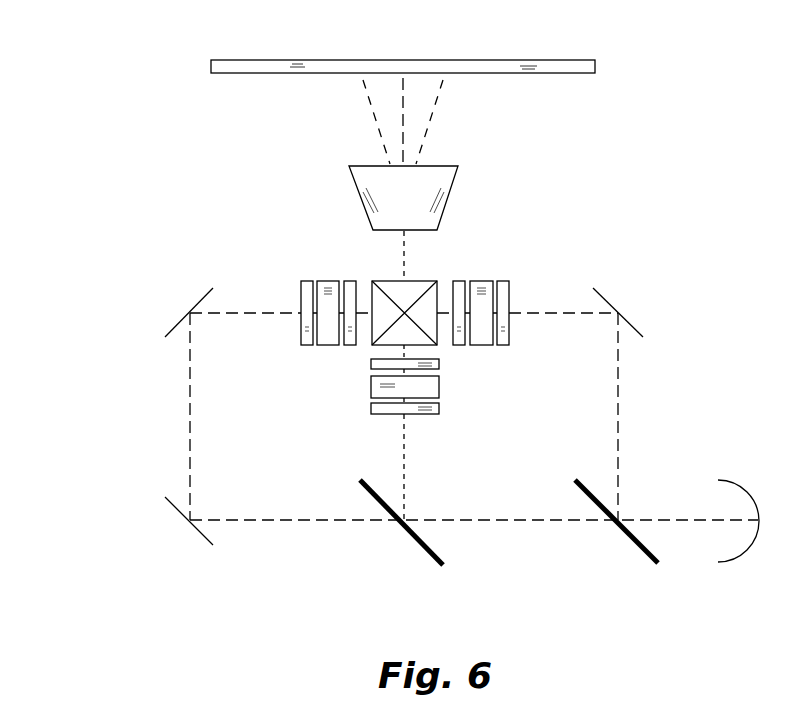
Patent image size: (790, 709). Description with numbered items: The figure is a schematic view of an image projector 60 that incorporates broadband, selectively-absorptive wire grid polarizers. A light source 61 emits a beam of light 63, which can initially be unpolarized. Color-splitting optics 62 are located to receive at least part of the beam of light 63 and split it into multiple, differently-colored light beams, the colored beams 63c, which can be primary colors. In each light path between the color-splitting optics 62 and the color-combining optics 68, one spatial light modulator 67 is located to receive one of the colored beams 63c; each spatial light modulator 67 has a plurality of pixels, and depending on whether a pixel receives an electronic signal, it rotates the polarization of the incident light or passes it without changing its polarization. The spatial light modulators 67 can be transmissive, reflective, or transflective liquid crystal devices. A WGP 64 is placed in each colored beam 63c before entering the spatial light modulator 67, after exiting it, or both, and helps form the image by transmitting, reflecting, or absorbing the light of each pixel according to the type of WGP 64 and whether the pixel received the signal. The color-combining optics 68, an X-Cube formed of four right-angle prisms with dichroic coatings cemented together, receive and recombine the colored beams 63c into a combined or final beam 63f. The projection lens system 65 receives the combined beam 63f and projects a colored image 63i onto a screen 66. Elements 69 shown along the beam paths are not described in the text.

The image projector 60 is at (113, 40).
The light source 61 is at (738, 481).
The color-splitting optics 62 is at (443, 571).
The beam of light 63 is at (682, 523).
The colored beams 63c is at (712, 373).
The combined beam 63f is at (403, 237).
The colored image 63i is at (435, 108).
The wire grid polarizer 64 is at (351, 281).
The projection lens system 65 is at (419, 204).
The screen 66 is at (387, 66).
The spatial light modulator 67 is at (328, 343).
The color-combining optics 68 is at (427, 280).
The dichroic mirror 69 is at (180, 320).